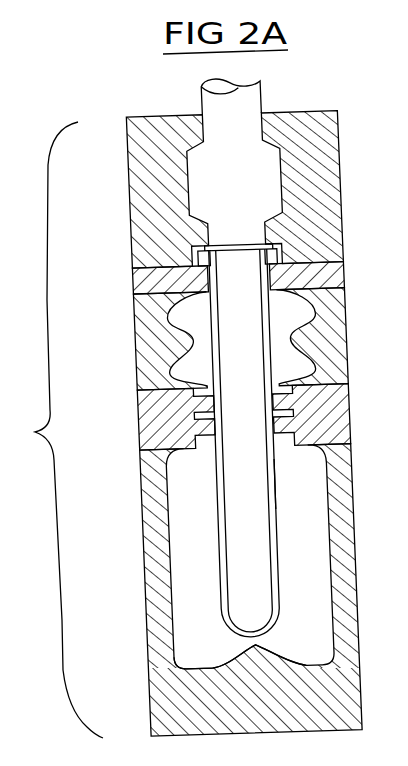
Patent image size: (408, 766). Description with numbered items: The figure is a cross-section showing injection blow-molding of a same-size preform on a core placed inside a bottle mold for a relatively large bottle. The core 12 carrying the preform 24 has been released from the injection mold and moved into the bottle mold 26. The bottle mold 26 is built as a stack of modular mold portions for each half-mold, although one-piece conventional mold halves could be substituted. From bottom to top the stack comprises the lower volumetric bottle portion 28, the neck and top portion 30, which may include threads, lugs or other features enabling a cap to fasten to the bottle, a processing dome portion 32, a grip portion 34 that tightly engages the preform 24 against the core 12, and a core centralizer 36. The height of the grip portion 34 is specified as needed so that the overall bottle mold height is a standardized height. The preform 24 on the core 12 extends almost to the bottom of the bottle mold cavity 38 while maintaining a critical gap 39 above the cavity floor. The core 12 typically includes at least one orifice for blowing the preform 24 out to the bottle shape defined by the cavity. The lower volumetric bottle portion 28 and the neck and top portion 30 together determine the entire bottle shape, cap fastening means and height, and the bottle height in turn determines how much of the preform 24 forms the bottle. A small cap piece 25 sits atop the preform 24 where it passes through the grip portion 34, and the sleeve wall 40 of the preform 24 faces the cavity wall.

The core 12 is at (243, 335).
The preform 24 is at (272, 540).
The collar 25 is at (270, 247).
The bottle mold 26 is at (51, 430).
The lower volumetric bottle portion 28 is at (347, 673).
The neck and top portion 30 is at (140, 427).
The processing dome portion 32 is at (140, 362).
The grip portion 34 is at (133, 278).
The core centralizer 36 is at (322, 140).
The bottle mold cavity 38 is at (153, 672).
The critical gap 39 is at (255, 648).
The sleeve wall 40 is at (267, 483).